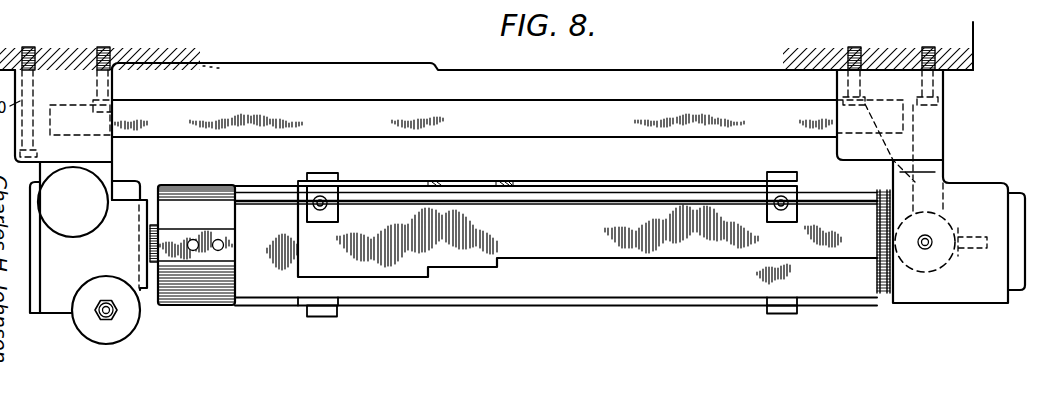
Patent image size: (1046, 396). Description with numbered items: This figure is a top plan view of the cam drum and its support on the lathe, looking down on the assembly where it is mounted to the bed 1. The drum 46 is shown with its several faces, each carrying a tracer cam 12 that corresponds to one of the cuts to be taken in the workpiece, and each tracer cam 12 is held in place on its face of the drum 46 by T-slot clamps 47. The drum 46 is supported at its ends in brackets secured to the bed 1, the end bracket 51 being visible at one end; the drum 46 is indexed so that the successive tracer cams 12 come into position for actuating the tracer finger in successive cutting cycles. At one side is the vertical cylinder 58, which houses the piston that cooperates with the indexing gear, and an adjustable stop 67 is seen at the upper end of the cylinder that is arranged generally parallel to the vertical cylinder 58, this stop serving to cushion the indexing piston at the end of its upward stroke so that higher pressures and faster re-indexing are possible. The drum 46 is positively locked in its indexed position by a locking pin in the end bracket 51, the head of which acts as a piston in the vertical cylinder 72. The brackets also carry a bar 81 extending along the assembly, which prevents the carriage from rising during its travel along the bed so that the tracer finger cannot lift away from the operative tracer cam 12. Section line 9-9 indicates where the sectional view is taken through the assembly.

The bed 1 is at (355, 65).
The section line 9- 9 is at (94, 30).
The tracer cam 12 is at (477, 182).
The drum 46 is at (80, 331).
The T-slot clamps 47 is at (336, 184).
The end bracket 51 is at (945, 88).
The vertical cylinder 58 is at (98, 177).
The adjustable stop 67 is at (115, 312).
The vertical cylinder 72 is at (937, 272).
The bar 81 is at (292, 137).